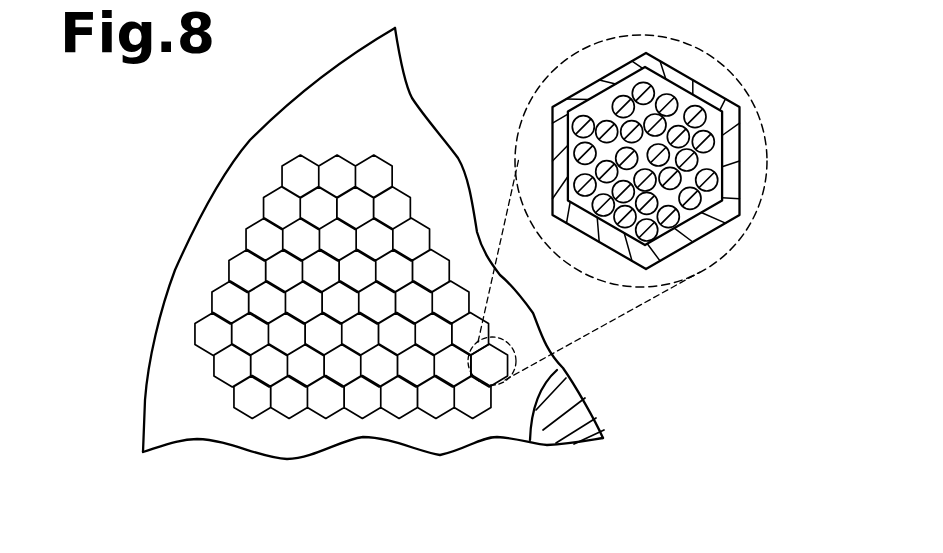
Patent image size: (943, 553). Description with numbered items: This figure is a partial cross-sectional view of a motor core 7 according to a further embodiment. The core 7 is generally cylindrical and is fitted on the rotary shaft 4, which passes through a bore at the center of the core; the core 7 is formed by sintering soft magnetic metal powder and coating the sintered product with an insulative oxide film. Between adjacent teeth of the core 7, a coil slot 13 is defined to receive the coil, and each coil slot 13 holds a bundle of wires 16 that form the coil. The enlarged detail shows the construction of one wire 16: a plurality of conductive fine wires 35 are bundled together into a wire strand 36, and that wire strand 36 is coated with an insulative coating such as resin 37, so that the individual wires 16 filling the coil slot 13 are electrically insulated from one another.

The core 7 is at (229, 447).
The coil slot 13 is at (325, 420).
The wire 16 is at (487, 368).
The rotary shaft 4 is at (567, 431).
The conductive fine wires 35 is at (708, 145).
The wire strand 36 is at (726, 199).
The resin 37 is at (714, 216).